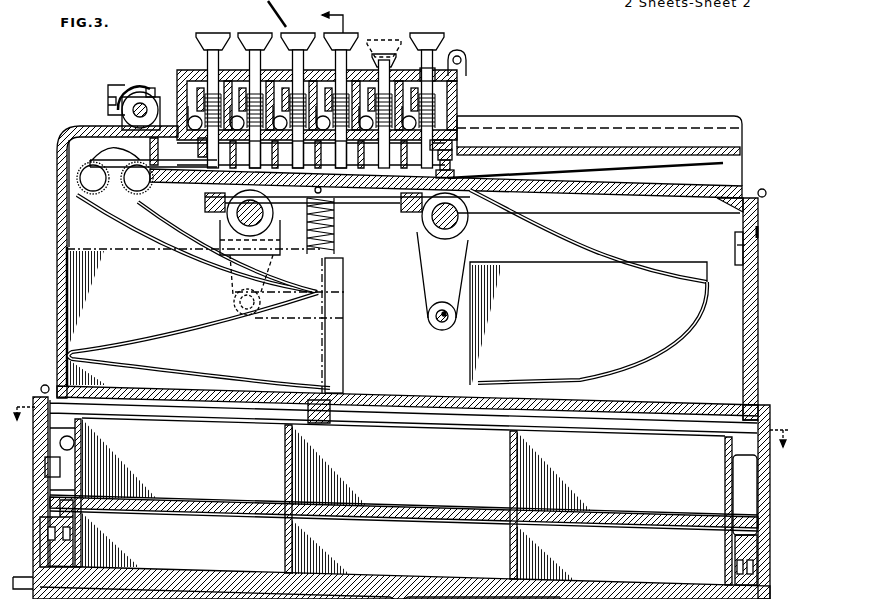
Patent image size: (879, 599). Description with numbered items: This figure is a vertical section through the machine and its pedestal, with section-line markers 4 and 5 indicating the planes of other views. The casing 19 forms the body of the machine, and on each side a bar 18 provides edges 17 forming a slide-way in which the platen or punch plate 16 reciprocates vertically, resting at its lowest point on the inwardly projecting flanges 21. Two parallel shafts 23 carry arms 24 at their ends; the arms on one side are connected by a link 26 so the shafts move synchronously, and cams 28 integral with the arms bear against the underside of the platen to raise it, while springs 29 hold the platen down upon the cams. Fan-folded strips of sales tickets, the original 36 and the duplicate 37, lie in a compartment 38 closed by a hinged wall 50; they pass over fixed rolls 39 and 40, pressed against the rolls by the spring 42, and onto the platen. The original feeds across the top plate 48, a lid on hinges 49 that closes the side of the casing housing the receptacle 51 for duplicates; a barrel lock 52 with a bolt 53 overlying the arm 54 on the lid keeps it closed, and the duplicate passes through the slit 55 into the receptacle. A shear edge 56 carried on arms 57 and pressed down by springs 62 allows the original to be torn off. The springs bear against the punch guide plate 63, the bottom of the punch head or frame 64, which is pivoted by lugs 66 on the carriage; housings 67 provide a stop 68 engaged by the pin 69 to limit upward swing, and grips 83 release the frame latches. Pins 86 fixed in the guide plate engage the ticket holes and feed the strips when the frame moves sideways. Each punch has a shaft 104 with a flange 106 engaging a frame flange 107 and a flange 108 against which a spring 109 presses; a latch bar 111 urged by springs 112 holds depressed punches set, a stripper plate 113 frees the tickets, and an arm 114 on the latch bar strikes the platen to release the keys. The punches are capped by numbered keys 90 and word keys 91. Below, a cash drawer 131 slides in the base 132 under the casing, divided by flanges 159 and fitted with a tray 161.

The section line 4 is at (401, 419).
The section line 5 is at (312, 17).
The platen or punch plate 16 is at (356, 198).
The edges 17 is at (181, 158).
The bars 18 is at (594, 205).
The casing 19 is at (756, 318).
The flanges 21 is at (312, 216).
The shafts 23 is at (273, 213).
The arm 24 is at (271, 246).
The link 26 is at (426, 310).
The cam 28 is at (205, 202).
The spring 29 is at (336, 234).
The strip 36 is at (194, 256).
The duplicate 37 is at (219, 264).
The compartment 38 is at (71, 272).
The roll 39 is at (101, 194).
The roll 40 is at (142, 194).
The spring 42 is at (104, 158).
The top plate 48 is at (599, 182).
The hinges 49 is at (766, 191).
The hinged lid or wall 50 is at (67, 229).
The receptacle 51 is at (475, 298).
The barrel lock 52 is at (760, 257).
The bolt or arm 53 is at (746, 245).
The arm 54 is at (760, 232).
The slit 55 is at (455, 175).
The shear edge 56 is at (455, 163).
The arms 57 is at (357, 153).
The springs 62 is at (455, 152).
The punch guide plate 63 is at (455, 144).
The frame or punch head 64 is at (182, 88).
The lugs 66 is at (160, 105).
The housings 67 is at (134, 90).
The stop 68 is at (110, 104).
The pin 69 is at (149, 88).
The grips 83 is at (464, 66).
The pins 86 is at (154, 136).
The numbered keys 90 is at (258, 33).
The keys 91 is at (214, 33).
The shaft 104 is at (427, 80).
The flange 106 is at (368, 116).
The flange 107 is at (325, 116).
The flange 108 is at (419, 113).
The spring 109 is at (333, 110).
The latch bar 111 is at (284, 116).
The springs 112 is at (247, 108).
The stripper plate 113 is at (279, 153).
The arm 114 is at (322, 153).
The cash drawer 131 is at (485, 576).
The base 132 is at (758, 475).
The flanges 159 is at (518, 556).
The tray 161 is at (729, 490).